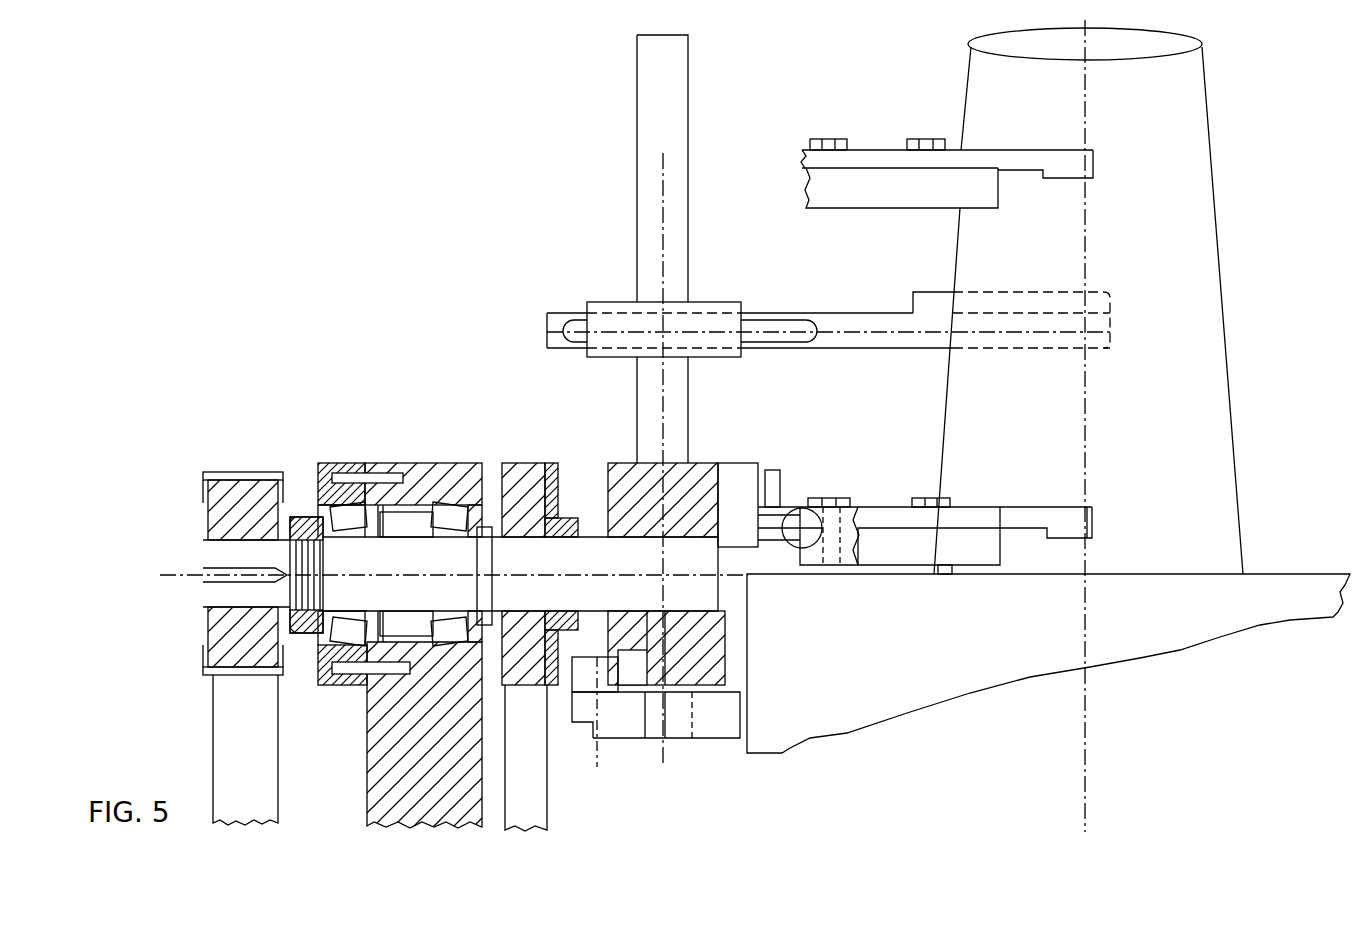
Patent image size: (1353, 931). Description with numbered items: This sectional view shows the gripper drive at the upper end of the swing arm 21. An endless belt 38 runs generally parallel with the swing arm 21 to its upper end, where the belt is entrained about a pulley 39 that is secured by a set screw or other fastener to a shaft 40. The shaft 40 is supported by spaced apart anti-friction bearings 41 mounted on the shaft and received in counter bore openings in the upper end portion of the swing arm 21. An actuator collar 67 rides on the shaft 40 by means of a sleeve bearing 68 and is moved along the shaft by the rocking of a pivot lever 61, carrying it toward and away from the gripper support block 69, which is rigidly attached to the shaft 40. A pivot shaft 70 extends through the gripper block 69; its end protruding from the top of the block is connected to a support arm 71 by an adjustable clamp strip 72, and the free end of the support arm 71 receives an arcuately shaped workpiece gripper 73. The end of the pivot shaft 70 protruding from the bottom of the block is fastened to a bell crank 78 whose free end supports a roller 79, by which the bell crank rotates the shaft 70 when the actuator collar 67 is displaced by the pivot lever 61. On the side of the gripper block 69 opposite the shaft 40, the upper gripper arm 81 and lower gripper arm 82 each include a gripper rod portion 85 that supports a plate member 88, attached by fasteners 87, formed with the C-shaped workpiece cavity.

The swing arm 21 is at (372, 752).
The endless belt 38 is at (225, 725).
The pulley 39 is at (222, 513).
The shaft 40 is at (220, 556).
The anti-friction bearings 41 is at (328, 512).
The pivot lever 61 is at (548, 790).
The actuator collar 67 is at (530, 463).
The sleeve bearing 68 is at (545, 538).
The gripper support block 69 is at (705, 463).
The pivot shaft 70 is at (686, 125).
The support arm 71 is at (773, 313).
The adjustable clamp strip 72 is at (704, 302).
The workpiece gripper 73 is at (926, 292).
The bell crank 78 is at (620, 738).
The roller 79 is at (580, 672).
The upper gripper arm 81 is at (880, 150).
The lower gripper arm 82 is at (870, 507).
The gripper rod portion 85 is at (850, 200).
The fasteners 87 is at (828, 139).
The plate member 88 is at (997, 150).